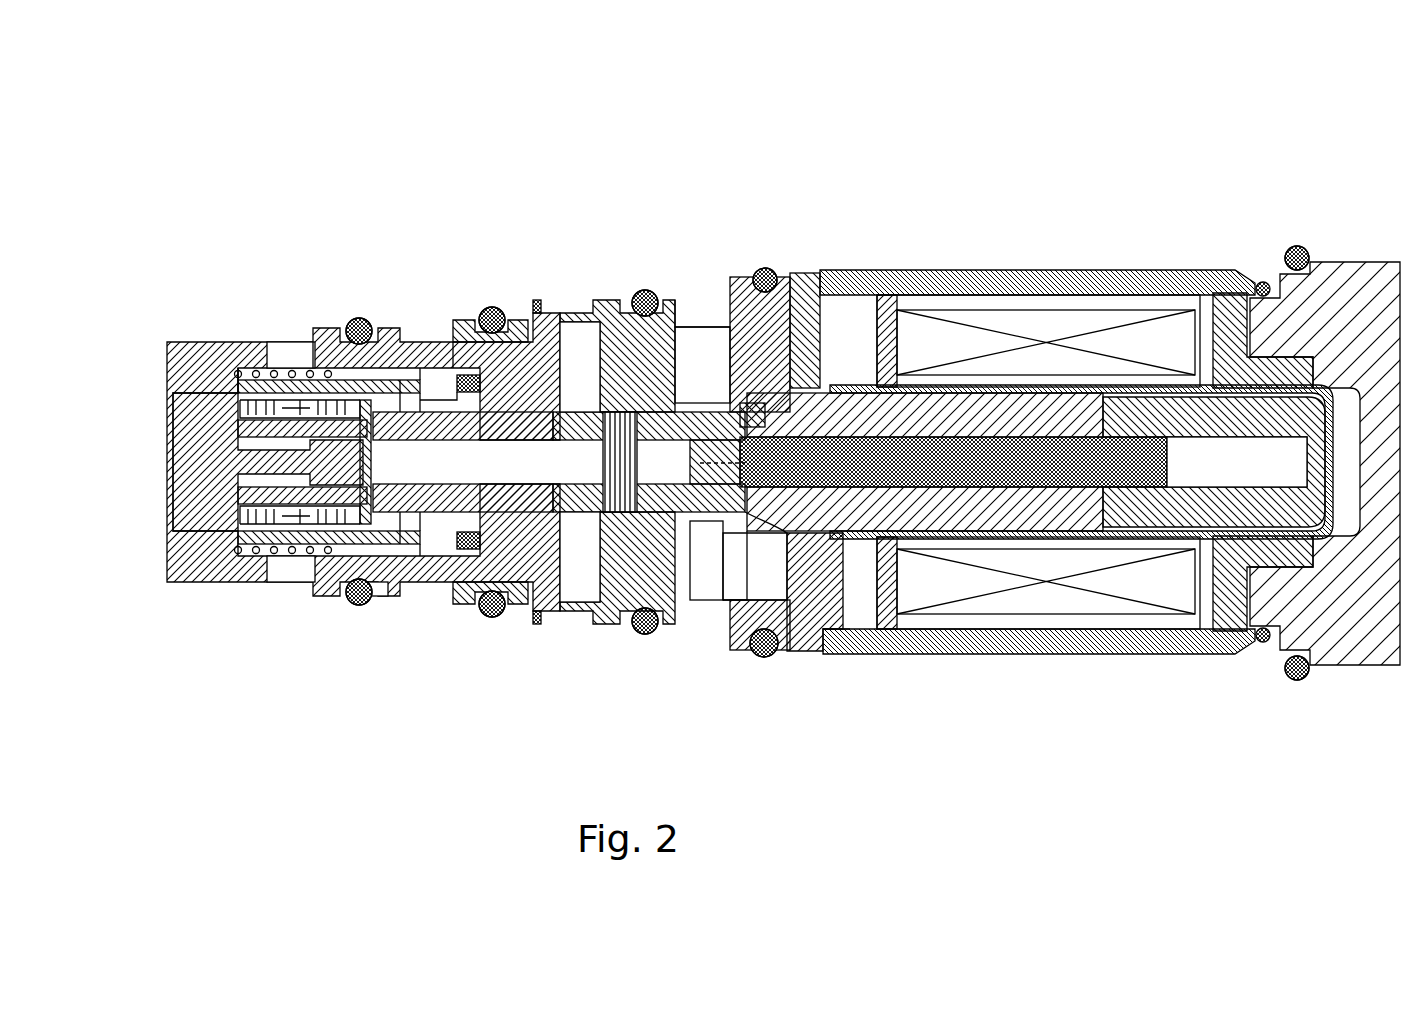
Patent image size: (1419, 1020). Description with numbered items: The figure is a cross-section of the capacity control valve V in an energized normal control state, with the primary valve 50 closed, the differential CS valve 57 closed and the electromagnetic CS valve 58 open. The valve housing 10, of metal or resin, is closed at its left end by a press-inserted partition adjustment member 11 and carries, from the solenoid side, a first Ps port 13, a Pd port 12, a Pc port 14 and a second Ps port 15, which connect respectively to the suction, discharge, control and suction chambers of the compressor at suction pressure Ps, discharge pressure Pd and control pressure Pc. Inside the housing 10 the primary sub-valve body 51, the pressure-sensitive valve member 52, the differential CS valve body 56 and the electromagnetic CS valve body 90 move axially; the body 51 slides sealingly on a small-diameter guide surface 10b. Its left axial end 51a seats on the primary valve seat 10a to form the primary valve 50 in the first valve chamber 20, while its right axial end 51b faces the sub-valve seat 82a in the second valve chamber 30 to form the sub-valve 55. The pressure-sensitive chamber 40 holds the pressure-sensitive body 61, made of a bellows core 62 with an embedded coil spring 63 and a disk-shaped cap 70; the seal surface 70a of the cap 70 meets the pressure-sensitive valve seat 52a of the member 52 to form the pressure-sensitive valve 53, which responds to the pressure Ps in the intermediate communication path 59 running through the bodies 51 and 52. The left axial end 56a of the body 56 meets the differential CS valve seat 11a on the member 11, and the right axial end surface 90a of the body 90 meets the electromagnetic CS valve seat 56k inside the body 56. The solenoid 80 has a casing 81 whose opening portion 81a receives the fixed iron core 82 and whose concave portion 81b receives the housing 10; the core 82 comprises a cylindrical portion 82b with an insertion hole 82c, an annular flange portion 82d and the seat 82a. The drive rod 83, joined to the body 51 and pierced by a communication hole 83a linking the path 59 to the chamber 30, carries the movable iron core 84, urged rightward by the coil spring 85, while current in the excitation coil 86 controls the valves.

The valve housing 10 is at (186, 337).
The primary valve seat 10a is at (540, 380).
The guide surface 10b is at (690, 360).
The partition adjustment member 11 is at (170, 455).
The differential CS valve seat 11a is at (252, 382).
The Pd port 12 is at (630, 300).
The first Ps port 13 is at (686, 360).
The Pc port 14 is at (432, 350).
The second Ps port 15 is at (282, 350).
The first valve chamber 20 is at (592, 306).
The second valve chamber 30 is at (740, 300).
The pressure-sensitive chamber 40 is at (457, 326).
The primary valve 50 is at (632, 180).
The primary sub-valve body 51 is at (640, 634).
The left axial end 51a is at (573, 370).
The right axial end 51b is at (755, 400).
The pressure-sensitive valve member 52 is at (470, 606).
The pressure-sensitive valve seat 52a is at (346, 600).
The pressure-sensitive valve 53 is at (412, 727).
The sub-valve 55 is at (725, 180).
The differential CS valve body 56 is at (316, 352).
The left axial end 56a is at (233, 398).
The electromagnetic CS valve seat 56k is at (318, 372).
The differential CS valve 57 is at (262, 180).
The electromagnetic CS valve 58 is at (455, 180).
The intermediate communication path 59 is at (605, 520).
The pressure-sensitive body 61 is at (255, 562).
The bellows core 62 is at (275, 556).
The coil spring 63 is at (322, 545).
The cap 70 is at (368, 525).
The seal surface 70a is at (374, 586).
The solenoid 80 is at (1212, 253).
The casing 81 is at (735, 662).
The opening portion 81a is at (833, 655).
The concave portion 81b is at (793, 652).
The fixed iron core 82 is at (1090, 274).
The sub-valve seat 82a is at (765, 268).
The cylindrical portion 82b is at (1057, 380).
The insertion hole 82c is at (988, 425).
The annular flange portion 82d is at (878, 285).
The drive rod 83 is at (1162, 285).
The communication hole 83a is at (716, 600).
The movable iron core 84 is at (1216, 636).
The coil spring 85 is at (1135, 640).
The excitation coil 86 is at (1035, 541).
The electromagnetic CS valve body 90 is at (402, 540).
The right axial end surface 90a is at (404, 412).
The suction pressure Ps is at (305, 340).
The control pressure Pc is at (432, 340).
The discharge pressure Pd is at (580, 312).
The capacity control valve V is at (1313, 132).